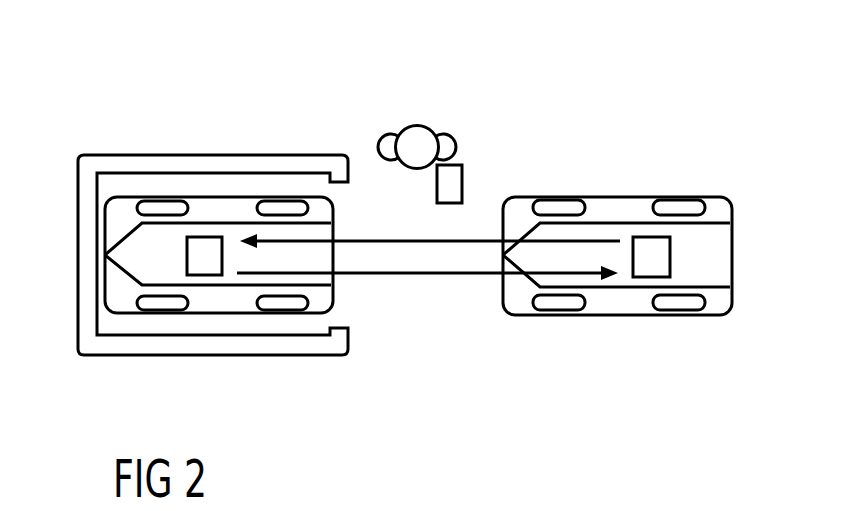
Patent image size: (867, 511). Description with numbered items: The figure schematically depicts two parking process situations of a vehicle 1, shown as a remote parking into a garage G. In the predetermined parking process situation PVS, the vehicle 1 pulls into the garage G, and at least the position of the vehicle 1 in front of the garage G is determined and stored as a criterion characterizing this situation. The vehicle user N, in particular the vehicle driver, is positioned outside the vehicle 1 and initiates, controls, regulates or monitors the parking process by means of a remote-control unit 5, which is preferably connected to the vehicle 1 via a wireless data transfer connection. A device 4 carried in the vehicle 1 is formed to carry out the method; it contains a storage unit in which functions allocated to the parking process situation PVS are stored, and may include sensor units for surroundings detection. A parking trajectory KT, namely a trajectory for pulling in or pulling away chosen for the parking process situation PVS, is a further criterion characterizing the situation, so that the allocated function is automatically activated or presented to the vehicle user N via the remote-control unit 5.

The vehicle 1 is at (220, 314).
The device 4 is at (205, 247).
The remote-control unit 5 is at (455, 173).
The garage G is at (280, 155).
The vehicle user N is at (415, 134).
The parking trajectory KT is at (385, 242).
The parking process situation PVS is at (504, 166).